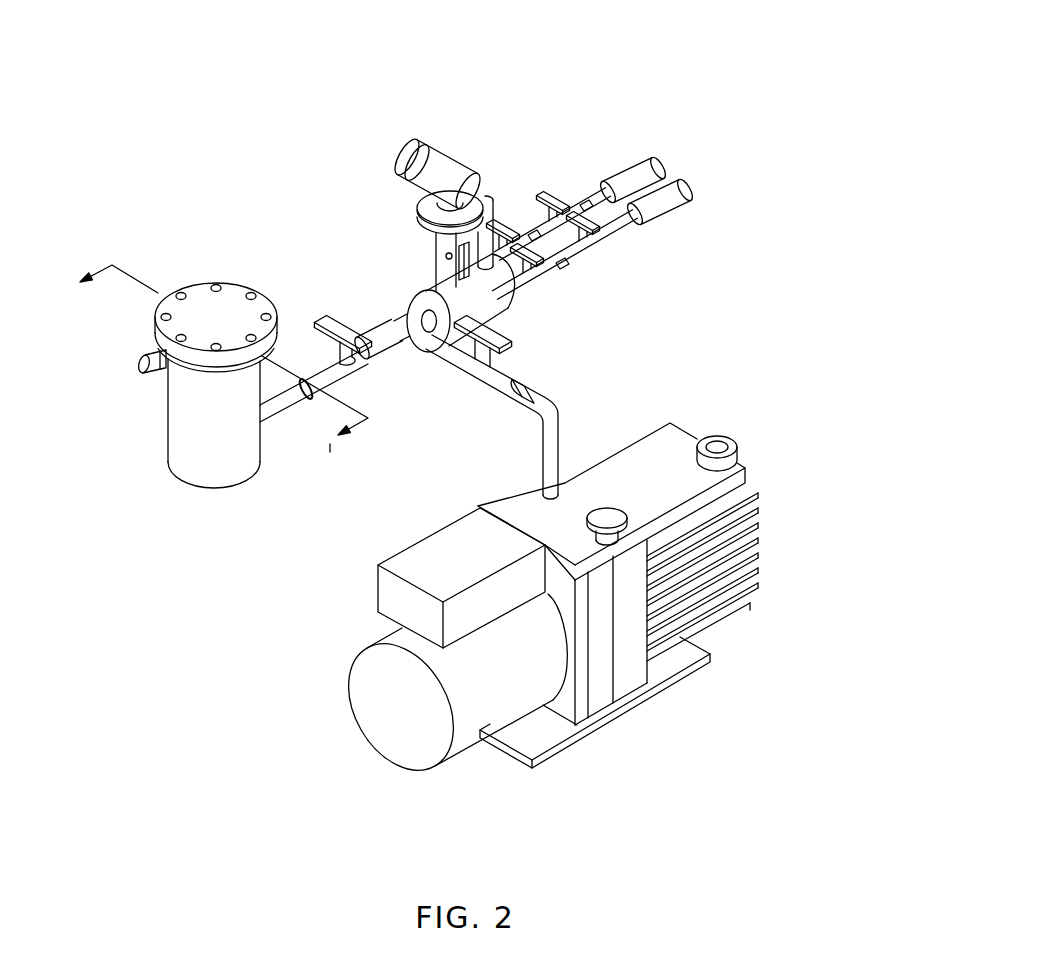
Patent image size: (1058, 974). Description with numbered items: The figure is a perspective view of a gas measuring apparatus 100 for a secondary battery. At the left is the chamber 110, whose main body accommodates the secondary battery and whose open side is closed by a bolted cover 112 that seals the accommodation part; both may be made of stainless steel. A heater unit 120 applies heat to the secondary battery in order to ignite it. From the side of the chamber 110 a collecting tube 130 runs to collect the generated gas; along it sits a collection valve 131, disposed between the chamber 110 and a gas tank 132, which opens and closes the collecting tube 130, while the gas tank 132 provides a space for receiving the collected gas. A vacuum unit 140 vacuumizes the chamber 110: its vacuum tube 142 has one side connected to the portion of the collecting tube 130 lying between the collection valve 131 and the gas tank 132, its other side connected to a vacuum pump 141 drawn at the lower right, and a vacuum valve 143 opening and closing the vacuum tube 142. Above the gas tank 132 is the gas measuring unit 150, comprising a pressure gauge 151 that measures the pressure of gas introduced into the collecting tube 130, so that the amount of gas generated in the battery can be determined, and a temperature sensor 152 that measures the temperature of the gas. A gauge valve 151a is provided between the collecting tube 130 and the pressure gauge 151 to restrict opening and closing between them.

The gas measuring apparatus 100 is at (688, 66).
The chamber 110 is at (247, 280).
The cover 112 is at (203, 310).
The heater unit 120 is at (183, 448).
The collecting tube 130 is at (289, 382).
The collection valve 131 is at (351, 325).
The gas tank 132 is at (500, 303).
The vacuum unit 140 is at (834, 290).
The vacuum pump 141 is at (758, 490).
The vacuum tube 142 is at (557, 425).
The vacuum valve 143 is at (510, 337).
The gas measuring unit 150 is at (465, 87).
The pressure gauge 151 is at (442, 153).
The gauge valve 151a is at (450, 257).
The temperature sensor 152 is at (497, 188).